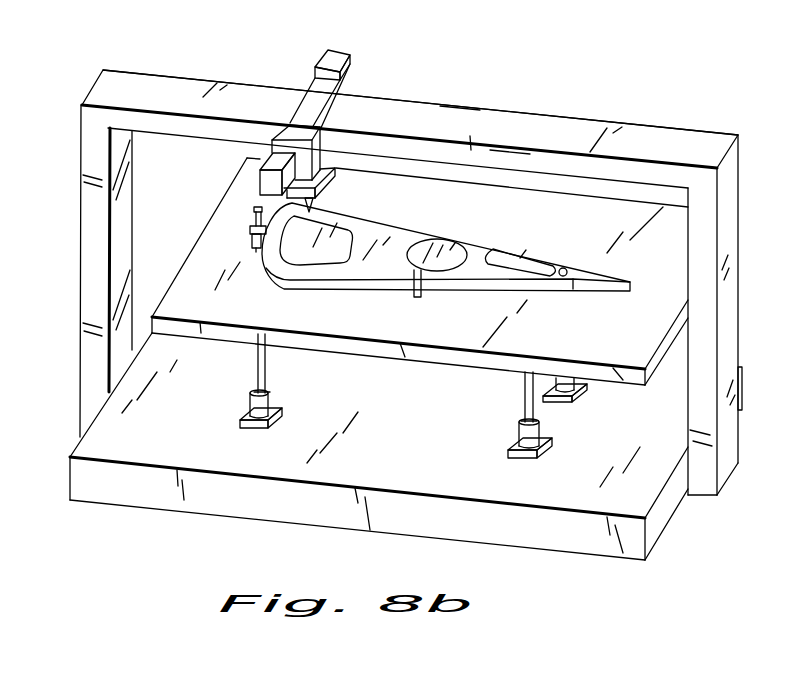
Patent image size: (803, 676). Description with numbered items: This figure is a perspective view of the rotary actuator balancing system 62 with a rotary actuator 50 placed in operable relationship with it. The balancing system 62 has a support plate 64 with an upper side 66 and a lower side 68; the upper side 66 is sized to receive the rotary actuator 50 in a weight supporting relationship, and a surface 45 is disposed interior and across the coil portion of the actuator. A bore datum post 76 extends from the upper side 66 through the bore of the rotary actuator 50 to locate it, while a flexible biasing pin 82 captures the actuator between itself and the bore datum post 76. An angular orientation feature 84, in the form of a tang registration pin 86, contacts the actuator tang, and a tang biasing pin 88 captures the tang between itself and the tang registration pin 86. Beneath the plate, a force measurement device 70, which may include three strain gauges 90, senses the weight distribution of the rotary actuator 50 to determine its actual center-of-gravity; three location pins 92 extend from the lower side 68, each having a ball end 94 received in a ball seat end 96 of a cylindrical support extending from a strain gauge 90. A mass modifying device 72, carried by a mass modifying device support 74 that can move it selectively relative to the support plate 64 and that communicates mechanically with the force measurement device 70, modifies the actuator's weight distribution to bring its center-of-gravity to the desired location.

The surface 45 is at (293, 252).
The rotary actuator 50 is at (383, 263).
The rotary actuator balancing system 62 is at (606, 90).
The support plate 64 is at (455, 193).
The upper side 66 is at (485, 197).
The lower side 68 is at (360, 362).
The force measurement device 70 is at (128, 454).
The mass modifying device 72 is at (331, 182).
The mass modifying device support 74 is at (168, 84).
The bore datum post 76 is at (462, 248).
The biasing pin 82 is at (421, 292).
The angular orientation feature 84 is at (250, 231).
The tang registration pin 86 is at (255, 212).
The tang biasing pin 88 is at (252, 243).
The strain gauges 90 is at (242, 422).
The location pins 92 is at (267, 364).
The ball end 94 is at (253, 390).
The ball seat end 96 is at (269, 398).